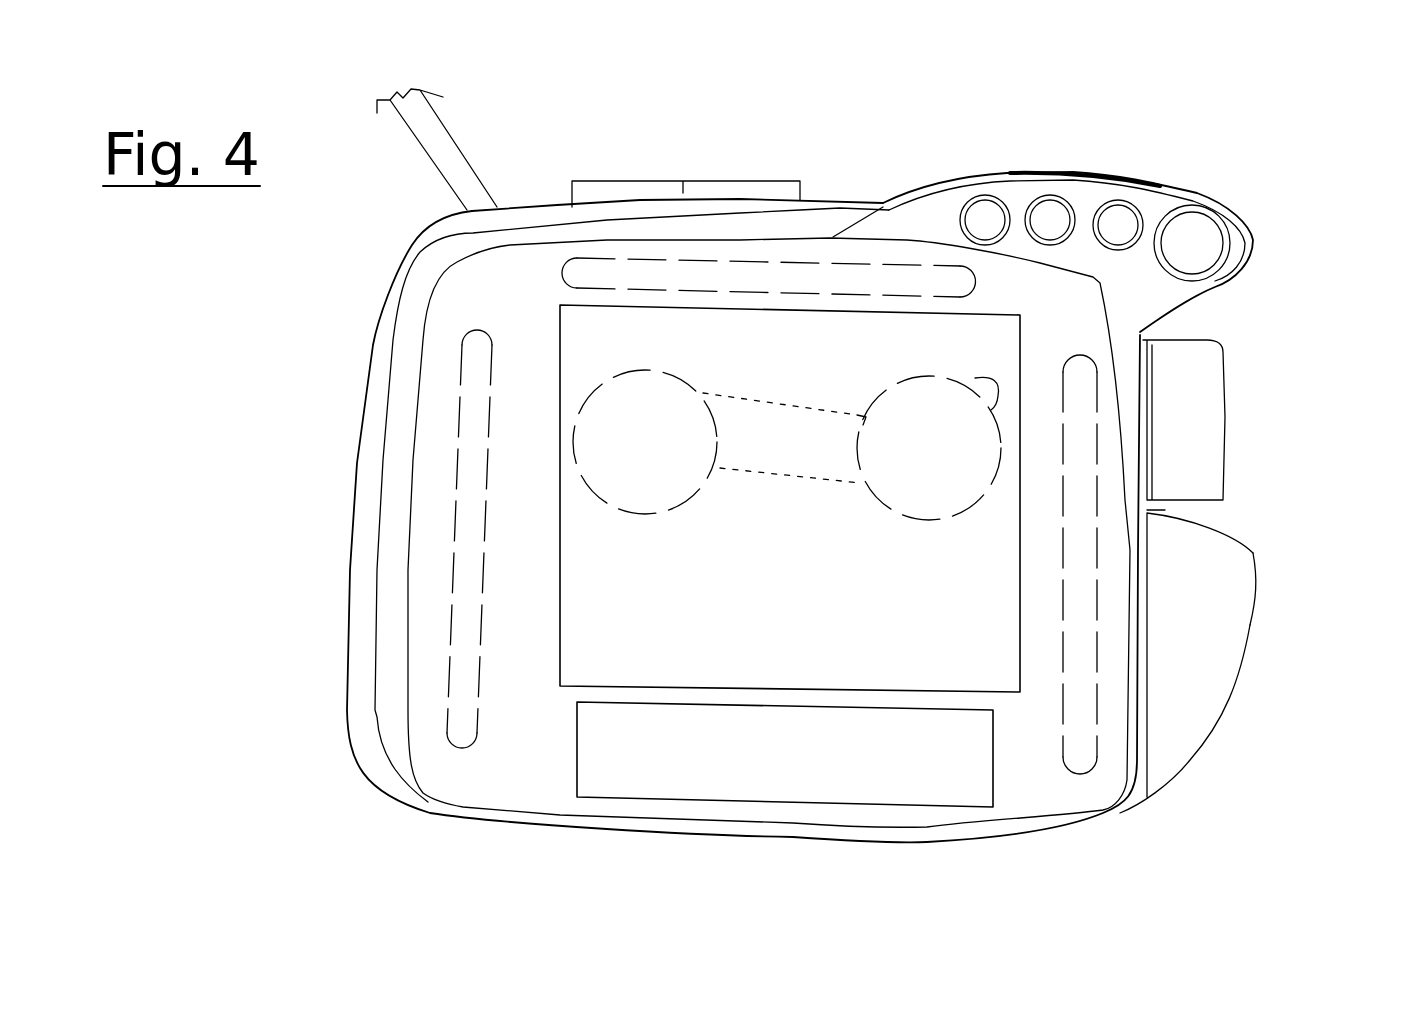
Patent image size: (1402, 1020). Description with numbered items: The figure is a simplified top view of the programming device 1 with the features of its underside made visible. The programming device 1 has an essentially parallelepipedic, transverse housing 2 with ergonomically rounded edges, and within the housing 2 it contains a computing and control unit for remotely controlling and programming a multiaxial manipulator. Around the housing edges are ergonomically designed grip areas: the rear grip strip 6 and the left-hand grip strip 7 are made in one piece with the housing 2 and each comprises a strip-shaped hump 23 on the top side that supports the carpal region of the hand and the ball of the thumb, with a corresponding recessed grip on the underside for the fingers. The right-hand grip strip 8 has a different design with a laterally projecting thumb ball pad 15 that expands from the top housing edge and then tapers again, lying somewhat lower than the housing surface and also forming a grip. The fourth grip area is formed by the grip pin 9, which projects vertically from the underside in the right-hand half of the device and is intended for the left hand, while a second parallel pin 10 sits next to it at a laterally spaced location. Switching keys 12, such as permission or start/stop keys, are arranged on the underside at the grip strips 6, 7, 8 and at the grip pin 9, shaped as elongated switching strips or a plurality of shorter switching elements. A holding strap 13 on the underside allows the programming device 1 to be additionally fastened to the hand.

The programming device 1 is at (1298, 255).
The housing 2 is at (387, 302).
The grip strip 6 is at (652, 208).
The grip strip 7 is at (373, 517).
The grip strip 8 is at (1250, 621).
The grip pin 9 is at (930, 497).
The second parallel pin 10 is at (640, 490).
The switching keys 12 is at (790, 278).
The holding strap 13 is at (777, 457).
The thumb ball pad 15 is at (1183, 703).
The hump 23 is at (683, 235).